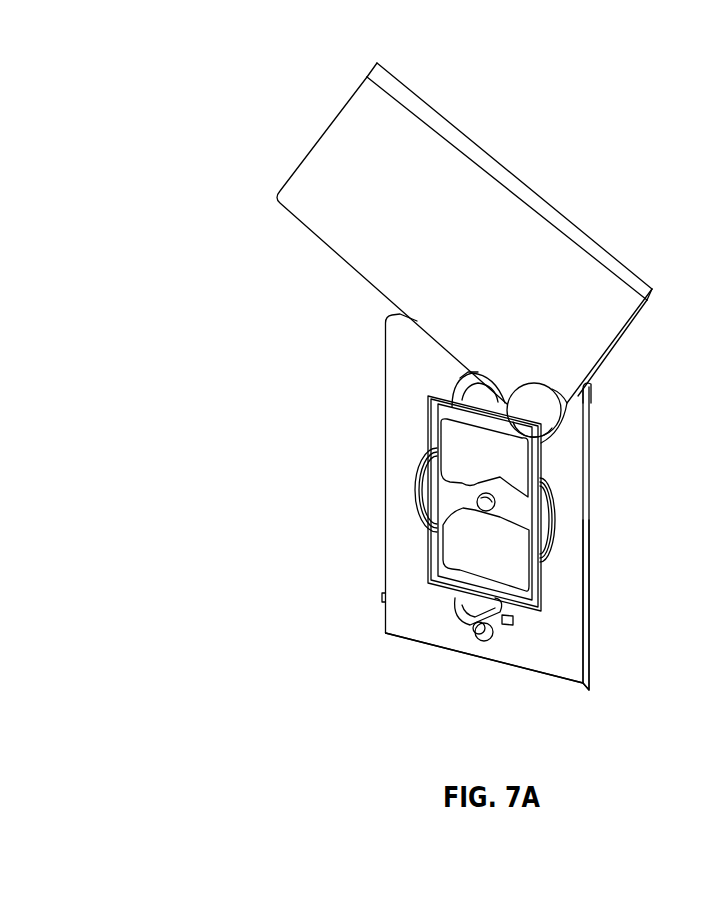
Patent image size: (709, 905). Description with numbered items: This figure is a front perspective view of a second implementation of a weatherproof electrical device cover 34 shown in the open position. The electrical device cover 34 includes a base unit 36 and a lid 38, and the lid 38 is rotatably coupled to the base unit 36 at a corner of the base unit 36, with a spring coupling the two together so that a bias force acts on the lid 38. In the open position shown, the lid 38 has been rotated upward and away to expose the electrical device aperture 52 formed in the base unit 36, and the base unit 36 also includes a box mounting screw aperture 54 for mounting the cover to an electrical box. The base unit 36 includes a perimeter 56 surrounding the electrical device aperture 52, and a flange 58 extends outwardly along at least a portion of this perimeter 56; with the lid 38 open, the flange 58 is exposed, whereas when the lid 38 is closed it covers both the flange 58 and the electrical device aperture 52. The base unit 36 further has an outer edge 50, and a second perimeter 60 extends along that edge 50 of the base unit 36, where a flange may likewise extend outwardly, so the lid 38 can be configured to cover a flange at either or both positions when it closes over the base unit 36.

The electrical device cover 34 is at (326, 369).
The base unit 36 is at (563, 650).
The lid 38 is at (362, 205).
The edge 50 is at (588, 620).
The electrical device aperture 52 is at (475, 457).
The box mounting screw aperture 54 is at (475, 383).
The perimeter 56 is at (447, 588).
The flange 58 is at (513, 508).
The perimeter 60 is at (450, 643).